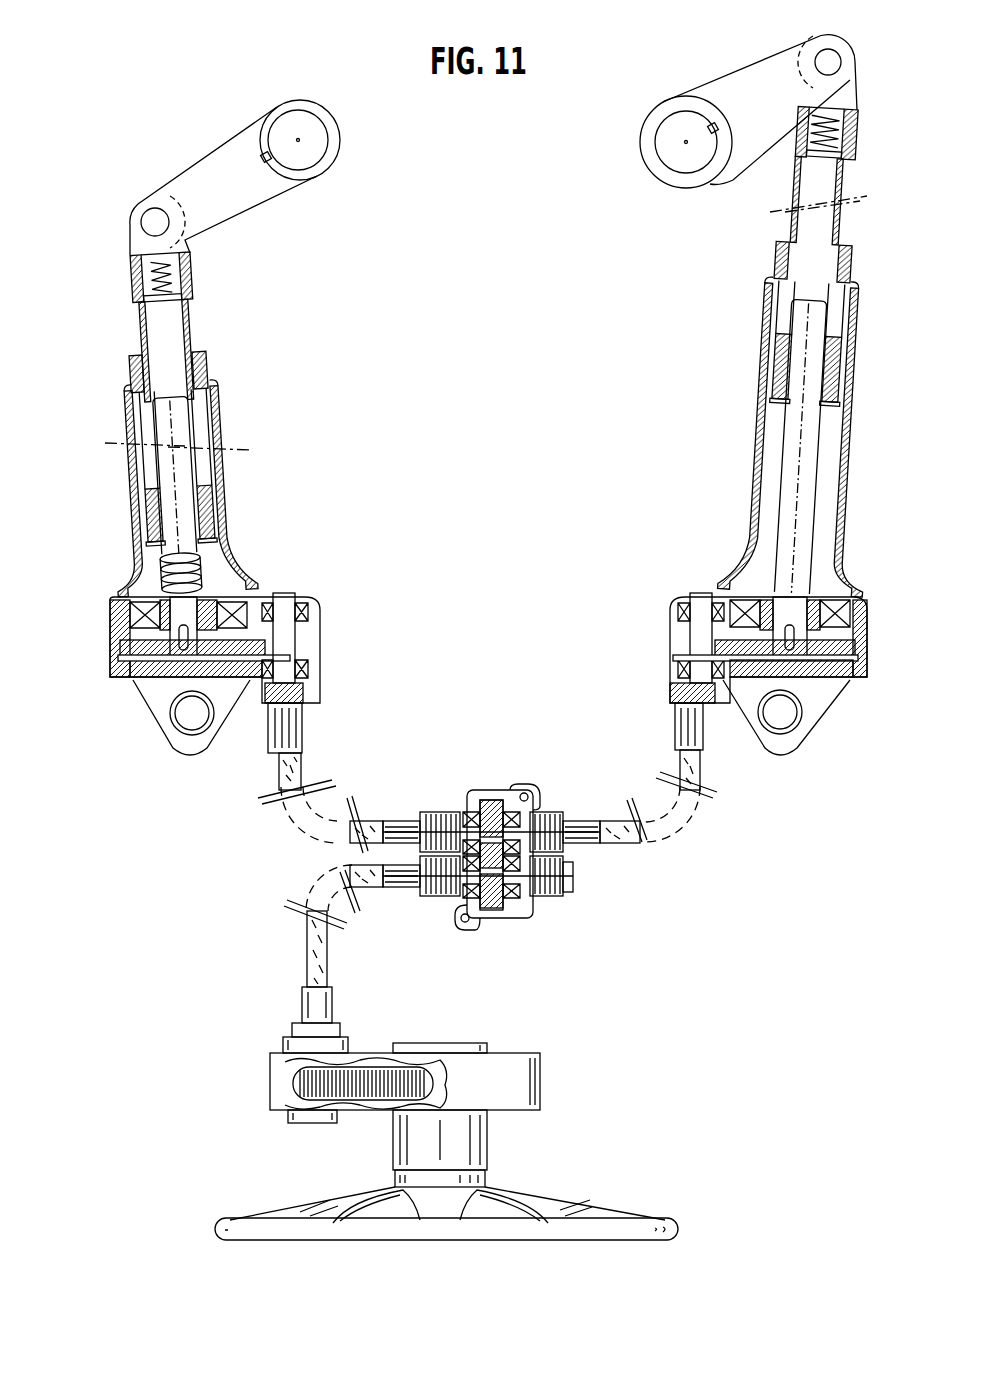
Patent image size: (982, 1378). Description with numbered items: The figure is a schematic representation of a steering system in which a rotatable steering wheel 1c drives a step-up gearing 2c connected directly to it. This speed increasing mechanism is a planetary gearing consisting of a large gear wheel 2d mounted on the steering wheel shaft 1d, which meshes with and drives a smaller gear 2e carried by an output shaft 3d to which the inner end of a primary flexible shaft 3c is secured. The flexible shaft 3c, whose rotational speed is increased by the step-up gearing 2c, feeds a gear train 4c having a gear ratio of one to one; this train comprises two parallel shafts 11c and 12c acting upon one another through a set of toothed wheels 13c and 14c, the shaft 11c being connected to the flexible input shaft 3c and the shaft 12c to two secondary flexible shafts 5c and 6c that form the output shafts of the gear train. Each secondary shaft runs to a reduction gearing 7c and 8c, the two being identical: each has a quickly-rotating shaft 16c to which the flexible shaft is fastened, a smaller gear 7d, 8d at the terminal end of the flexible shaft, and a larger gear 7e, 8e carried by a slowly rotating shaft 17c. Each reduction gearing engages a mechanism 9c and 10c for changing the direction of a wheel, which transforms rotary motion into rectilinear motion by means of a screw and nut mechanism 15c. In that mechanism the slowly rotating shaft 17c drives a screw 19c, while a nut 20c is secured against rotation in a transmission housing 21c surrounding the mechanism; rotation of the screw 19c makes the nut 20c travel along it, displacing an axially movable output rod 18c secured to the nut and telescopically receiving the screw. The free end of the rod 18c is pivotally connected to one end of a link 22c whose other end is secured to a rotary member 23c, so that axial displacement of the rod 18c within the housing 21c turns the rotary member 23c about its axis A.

The steering wheel 1c is at (580, 1227).
The steering wheel shaft 1d is at (398, 1110).
The step-up gearing 2c is at (370, 1110).
The large gear wheel 2d is at (480, 1023).
The smaller gear 2e is at (310, 1084).
The primary flexible shaft 3c is at (313, 980).
The output shaft 3d is at (307, 1067).
The gear train 4c is at (500, 788).
The secondary flexible shaft 5c is at (307, 762).
The secondary flexible shaft 6c is at (687, 770).
The reduction gearing 7c is at (326, 641).
The smaller gear 7d is at (310, 664).
The larger gear 7e is at (120, 656).
The reduction gearing 8c is at (658, 629).
The smaller gear 8d is at (670, 641).
The larger gear 8e is at (840, 660).
The mechanism for changing the direction of a wheel 9c is at (232, 481).
The mechanism for changing the direction of a wheel 10c is at (773, 252).
The shaft 11c is at (516, 891).
The shaft 12c is at (530, 800).
The toothed wheel 13c is at (481, 916).
The toothed wheel 14c is at (475, 790).
The screw and nut mechanism 15c is at (208, 540).
The quickly-rotating shaft 16c is at (700, 603).
The slowly rotating shaft 17c is at (790, 607).
The output rod 18c is at (797, 186).
The screw 19c is at (794, 447).
The nut 20c is at (780, 350).
The transmission housing 21c is at (773, 298).
The link 22c is at (720, 91).
The rotary member 23c is at (673, 128).
The axis A is at (298, 143).